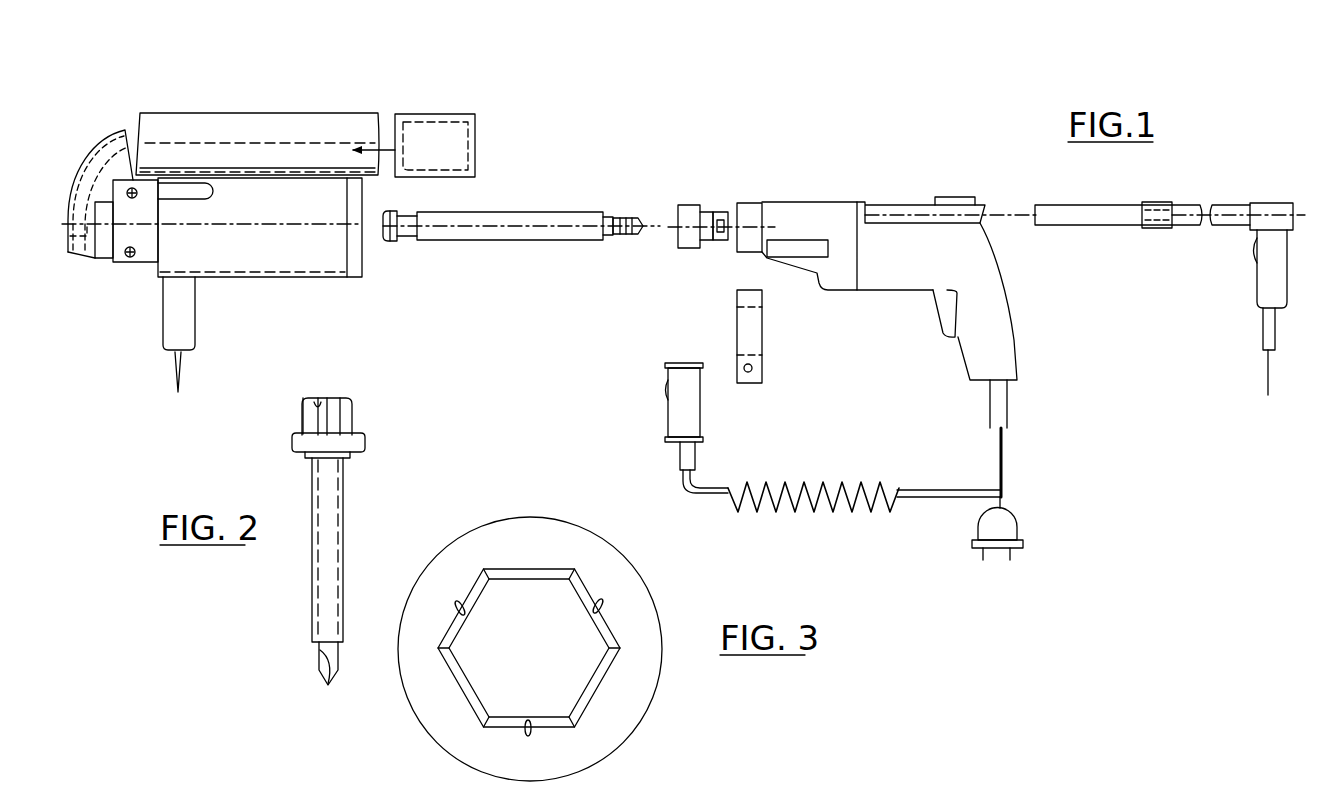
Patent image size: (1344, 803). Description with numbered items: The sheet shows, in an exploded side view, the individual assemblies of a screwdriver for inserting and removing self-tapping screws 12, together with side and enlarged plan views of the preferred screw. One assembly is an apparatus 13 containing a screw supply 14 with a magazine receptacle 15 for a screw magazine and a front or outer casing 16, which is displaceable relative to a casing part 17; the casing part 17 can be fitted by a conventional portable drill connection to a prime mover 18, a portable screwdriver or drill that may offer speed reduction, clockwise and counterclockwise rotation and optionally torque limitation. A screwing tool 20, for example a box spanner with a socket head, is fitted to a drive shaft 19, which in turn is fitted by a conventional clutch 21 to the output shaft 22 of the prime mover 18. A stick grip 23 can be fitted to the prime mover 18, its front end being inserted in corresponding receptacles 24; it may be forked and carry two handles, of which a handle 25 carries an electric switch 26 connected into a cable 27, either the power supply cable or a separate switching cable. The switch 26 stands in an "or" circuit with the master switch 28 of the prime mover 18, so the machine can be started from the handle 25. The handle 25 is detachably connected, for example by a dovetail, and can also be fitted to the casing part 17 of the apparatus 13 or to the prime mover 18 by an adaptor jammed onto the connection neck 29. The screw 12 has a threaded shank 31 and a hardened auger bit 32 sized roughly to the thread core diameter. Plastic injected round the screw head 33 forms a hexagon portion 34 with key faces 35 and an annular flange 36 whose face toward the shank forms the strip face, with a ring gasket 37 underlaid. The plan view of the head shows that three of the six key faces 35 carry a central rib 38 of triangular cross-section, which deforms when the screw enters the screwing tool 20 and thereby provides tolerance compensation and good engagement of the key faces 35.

In FIG. 2, the self-tapping screw 12 is at (466, 454).
In FIG. 1, the apparatus 13 is at (342, 73).
In FIG. 1, the screw supply 14 is at (97, 142).
In FIG. 1, the magazine receptacle 15 is at (266, 123).
In FIG. 1, the front or outer casing 16 is at (132, 232).
In FIG. 1, the casing part 17 is at (305, 266).
In FIG. 1, the prime mover 18 is at (838, 212).
In FIG. 1, the drive shaft 19 is at (540, 212).
In FIG. 1, the screwing tool 20 is at (395, 240).
In FIG. 1, the clutch 21 is at (628, 238).
In FIG. 1, the output shaft 22 is at (688, 210).
In FIG. 1, the stick grip 23 is at (1198, 201).
In FIG. 1, the receptacles 24 is at (950, 207).
In FIG. 1, the handle 25 is at (190, 326).
In FIG. 1, the electric switch 26 is at (1249, 250).
In FIG. 1, the cable 27 is at (1005, 470).
In FIG. 1, the master switch 28 is at (937, 315).
In FIG. 1, the connection neck 29 is at (752, 210).
In FIG. 2, the threaded shank 31 is at (335, 527).
In FIG. 2, the auger bit 32 is at (322, 676).
In FIG. 2, the screw head 33 is at (366, 412).
In FIG. 2, the hexagon portion 34 is at (343, 398).
In FIG. 3, the hexagon portion 34 is at (544, 645).
In FIG. 2, the key faces 35 is at (302, 420).
In FIG. 3, the key faces 35 is at (545, 568).
In FIG. 2, the annular flange 36 is at (293, 448).
In FIG. 3, the annular flange 36 is at (642, 600).
In FIG. 2, the ring gasket 37 is at (353, 458).
In FIG. 2, the rib 38 is at (320, 400).
In FIG. 3, the rib 38 is at (602, 605).